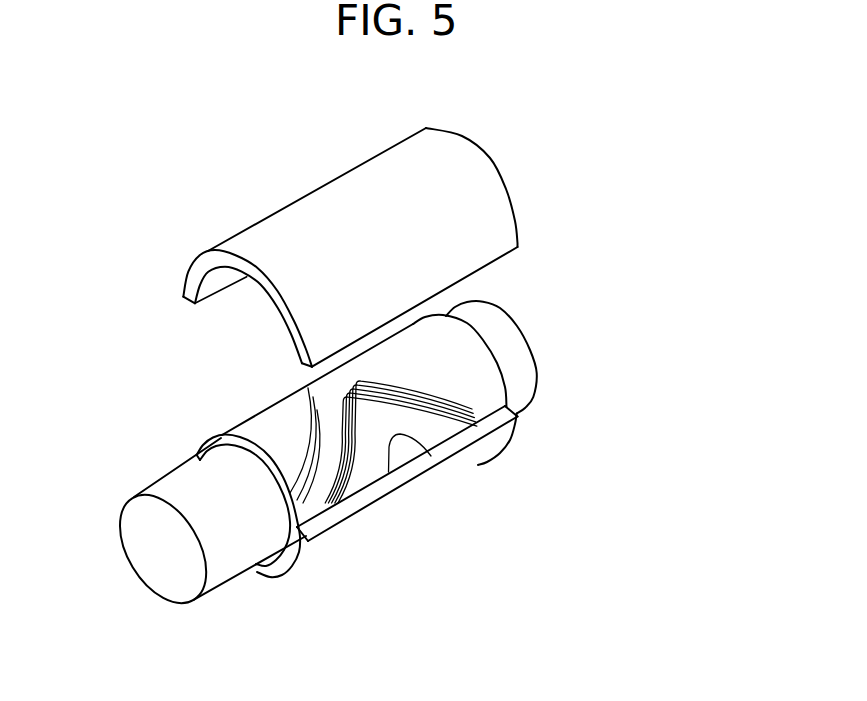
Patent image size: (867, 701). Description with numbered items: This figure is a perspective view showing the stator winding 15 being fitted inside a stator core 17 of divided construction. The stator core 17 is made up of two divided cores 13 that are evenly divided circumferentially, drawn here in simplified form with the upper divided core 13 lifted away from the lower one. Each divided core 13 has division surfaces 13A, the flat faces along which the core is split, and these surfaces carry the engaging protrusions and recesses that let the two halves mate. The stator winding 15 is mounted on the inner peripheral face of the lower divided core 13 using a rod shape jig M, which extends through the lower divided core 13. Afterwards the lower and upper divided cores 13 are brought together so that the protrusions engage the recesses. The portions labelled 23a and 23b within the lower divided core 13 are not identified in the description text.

The divided core 13 is at (394, 352).
The division surface 13A is at (184, 299).
The stator winding 15 is at (199, 422).
The stator core 17 is at (627, 280).
The flat portion of leaf spring 23a is at (357, 482).
The bent portion of leaf spring 23b is at (408, 455).
The rod shape jig M is at (225, 568).